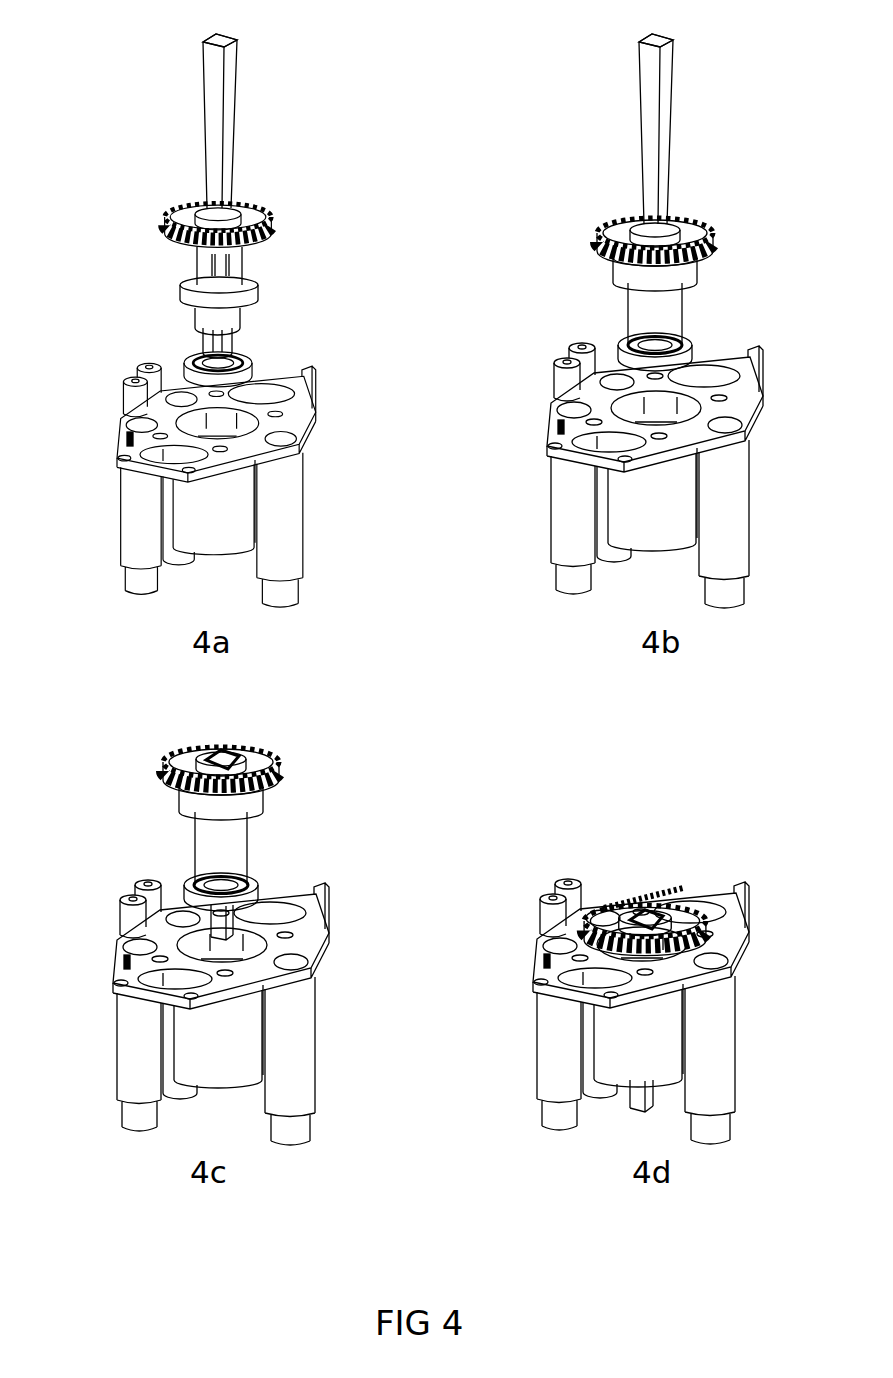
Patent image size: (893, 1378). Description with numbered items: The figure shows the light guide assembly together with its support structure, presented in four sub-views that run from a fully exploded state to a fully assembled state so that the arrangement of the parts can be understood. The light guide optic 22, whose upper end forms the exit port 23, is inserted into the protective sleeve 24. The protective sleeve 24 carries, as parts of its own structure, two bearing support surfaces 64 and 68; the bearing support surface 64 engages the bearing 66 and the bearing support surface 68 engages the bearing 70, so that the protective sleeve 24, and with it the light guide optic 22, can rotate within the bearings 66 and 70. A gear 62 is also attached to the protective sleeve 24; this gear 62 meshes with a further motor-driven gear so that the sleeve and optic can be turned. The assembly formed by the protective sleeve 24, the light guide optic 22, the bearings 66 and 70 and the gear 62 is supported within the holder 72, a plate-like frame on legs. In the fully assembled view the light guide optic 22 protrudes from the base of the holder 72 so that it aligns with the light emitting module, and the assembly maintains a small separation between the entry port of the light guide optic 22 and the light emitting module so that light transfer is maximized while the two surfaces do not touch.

The light guide optic 22 is at (215, 165).
The exit port 23 is at (213, 33).
The protective sleeve 24 is at (247, 277).
The gear 62 is at (182, 217).
The bearing support surface 64 is at (197, 265).
The bearing 66 is at (188, 295).
The bearing support surface 68 is at (241, 343).
The bearing 70 is at (244, 377).
The holder 72 is at (130, 435).